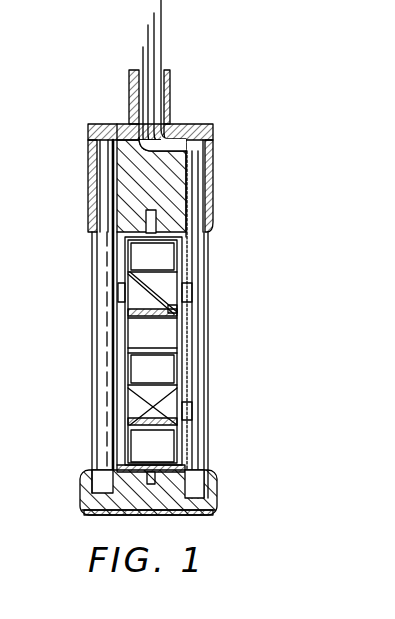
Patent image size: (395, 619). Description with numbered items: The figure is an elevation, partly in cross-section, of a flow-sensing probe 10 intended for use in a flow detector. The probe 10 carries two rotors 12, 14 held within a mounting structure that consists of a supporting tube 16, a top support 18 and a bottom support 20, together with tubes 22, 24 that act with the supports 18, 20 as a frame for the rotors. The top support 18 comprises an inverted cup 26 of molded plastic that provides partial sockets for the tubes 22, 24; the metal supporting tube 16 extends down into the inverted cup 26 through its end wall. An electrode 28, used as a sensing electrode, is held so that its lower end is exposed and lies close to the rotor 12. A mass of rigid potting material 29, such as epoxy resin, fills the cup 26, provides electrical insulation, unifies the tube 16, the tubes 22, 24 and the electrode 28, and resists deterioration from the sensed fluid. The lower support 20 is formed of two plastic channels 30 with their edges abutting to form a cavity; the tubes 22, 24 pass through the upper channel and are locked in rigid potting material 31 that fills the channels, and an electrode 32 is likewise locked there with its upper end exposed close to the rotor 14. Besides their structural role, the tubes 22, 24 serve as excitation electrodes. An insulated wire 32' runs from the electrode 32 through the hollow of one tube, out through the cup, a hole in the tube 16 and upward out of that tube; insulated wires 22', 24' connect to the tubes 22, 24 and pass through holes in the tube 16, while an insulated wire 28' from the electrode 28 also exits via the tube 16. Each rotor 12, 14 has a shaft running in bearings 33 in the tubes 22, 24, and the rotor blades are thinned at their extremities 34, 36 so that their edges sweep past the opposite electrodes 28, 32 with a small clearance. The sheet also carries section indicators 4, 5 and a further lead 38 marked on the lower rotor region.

The probe 10 is at (86, 152).
The rotor 12 is at (126, 252).
The rotor 14 is at (132, 371).
The supporting tube 16 is at (170, 88).
The top support 18 is at (213, 133).
The bottom support 20 is at (217, 502).
The tube 22 is at (84, 305).
The insulated wire 22' is at (140, 94).
The tube 24 is at (186, 310).
The insulated wire 24' is at (181, 72).
The inverted cup 26 is at (117, 127).
The electrode 28 is at (152, 253).
The insulated wire 28' is at (145, 82).
The potting material 29 is at (117, 227).
The channels 30 is at (100, 513).
The potting material 31 is at (88, 500).
The electrode 32 is at (151, 456).
The insulated wire 32' is at (205, 249).
The bearings 33 is at (192, 292).
The thinned extremity 34 is at (116, 281).
The thinned extremity 36 is at (177, 311).
The chambers 38 is at (160, 320).
The section line 4- 4 is at (63, 210).
The section line 5- 5 is at (52, 433).